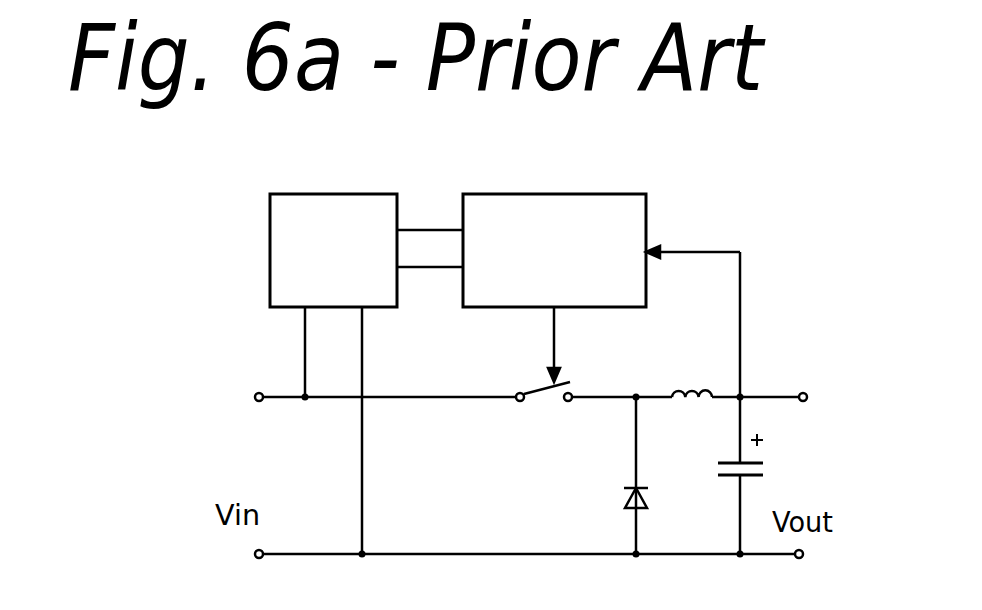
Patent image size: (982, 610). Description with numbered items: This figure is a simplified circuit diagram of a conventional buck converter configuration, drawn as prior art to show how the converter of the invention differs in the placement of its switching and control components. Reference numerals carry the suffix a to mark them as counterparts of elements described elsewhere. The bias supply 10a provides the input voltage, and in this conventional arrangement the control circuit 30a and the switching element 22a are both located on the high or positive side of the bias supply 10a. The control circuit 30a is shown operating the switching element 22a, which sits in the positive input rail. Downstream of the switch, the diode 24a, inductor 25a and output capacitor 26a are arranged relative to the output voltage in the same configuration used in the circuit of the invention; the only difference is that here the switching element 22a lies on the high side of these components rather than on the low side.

The bias supply 10a is at (265, 246).
The control circuit 30a is at (608, 216).
The switching element 22a is at (542, 428).
The diode 24a is at (594, 507).
The inductor 25a is at (692, 349).
The output capacitor 26a is at (784, 451).